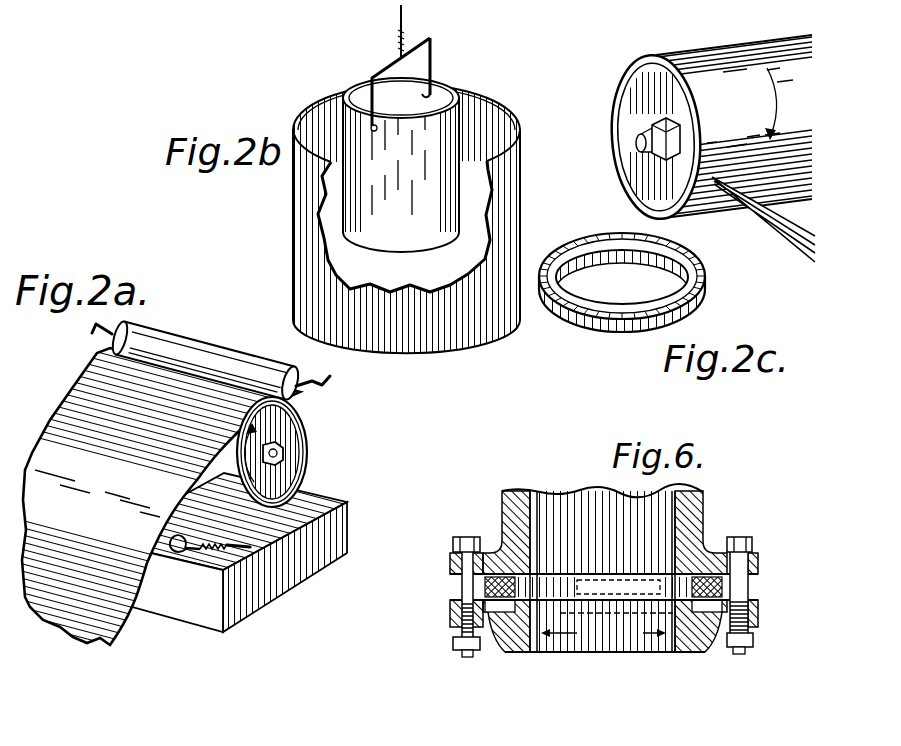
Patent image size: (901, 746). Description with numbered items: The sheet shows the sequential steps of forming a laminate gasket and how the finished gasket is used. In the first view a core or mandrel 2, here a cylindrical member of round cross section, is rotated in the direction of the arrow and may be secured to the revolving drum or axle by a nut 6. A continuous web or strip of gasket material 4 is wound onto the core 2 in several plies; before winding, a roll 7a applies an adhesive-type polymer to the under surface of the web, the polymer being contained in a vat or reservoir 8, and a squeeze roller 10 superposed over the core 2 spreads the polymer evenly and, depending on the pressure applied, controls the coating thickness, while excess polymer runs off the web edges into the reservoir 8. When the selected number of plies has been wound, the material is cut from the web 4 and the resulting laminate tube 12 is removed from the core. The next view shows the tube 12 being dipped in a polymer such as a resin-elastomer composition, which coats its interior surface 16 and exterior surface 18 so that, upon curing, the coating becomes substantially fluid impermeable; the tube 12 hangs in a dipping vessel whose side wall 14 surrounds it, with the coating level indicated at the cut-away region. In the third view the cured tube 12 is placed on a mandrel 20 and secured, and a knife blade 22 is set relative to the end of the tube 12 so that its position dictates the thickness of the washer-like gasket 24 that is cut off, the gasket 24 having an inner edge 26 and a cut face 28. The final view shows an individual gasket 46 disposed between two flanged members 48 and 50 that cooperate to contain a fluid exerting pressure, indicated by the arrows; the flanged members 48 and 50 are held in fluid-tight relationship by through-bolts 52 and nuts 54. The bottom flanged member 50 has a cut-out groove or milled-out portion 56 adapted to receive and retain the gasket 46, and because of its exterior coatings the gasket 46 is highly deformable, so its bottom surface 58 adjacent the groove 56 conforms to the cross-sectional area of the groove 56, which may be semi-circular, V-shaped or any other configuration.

In FIG. 2A, the core or mandrel 2 is at (288, 434).
In FIG. 2A, the web or strip of gasket material 4 is at (108, 603).
In FIG. 2A, the nut 6 is at (283, 453).
In FIG. 2A, the roll 7a is at (175, 553).
In FIG. 2A, the vat or reservoir 8 is at (292, 567).
In FIG. 2A, the squeeze roller 10 is at (187, 345).
In FIG. 2B, the laminate tube 12 is at (445, 133).
In FIG. 2C, the laminate tube 12 is at (697, 116).
In FIG. 2B, the outer cup 14 is at (498, 173).
In FIG. 2B, the interior surface 16 is at (440, 90).
In FIG. 2B, the exterior surface 18 is at (428, 216).
In FIG. 2C, the mandrel 20 is at (640, 97).
In FIG. 2C, the knife blade 22 is at (750, 220).
In FIG. 2C, the gasket 24 is at (646, 284).
In FIG. 2C, the ring inner edge 26 is at (578, 245).
In FIG. 2C, the ring bottom edge 28 is at (598, 331).
In FIG. 6, the gasket 46 is at (578, 576).
In FIG. 6, the flanged member 48 is at (514, 502).
In FIG. 6, the bottom flanged member 50 is at (513, 643).
In FIG. 6, the through-bolts 52 is at (460, 583).
In FIG. 6, the nuts 54 is at (454, 540).
In FIG. 6, the cut-out groove or milled-out portion 56 is at (493, 612).
In FIG. 6, the bottom surface of the gasket 58 is at (505, 614).